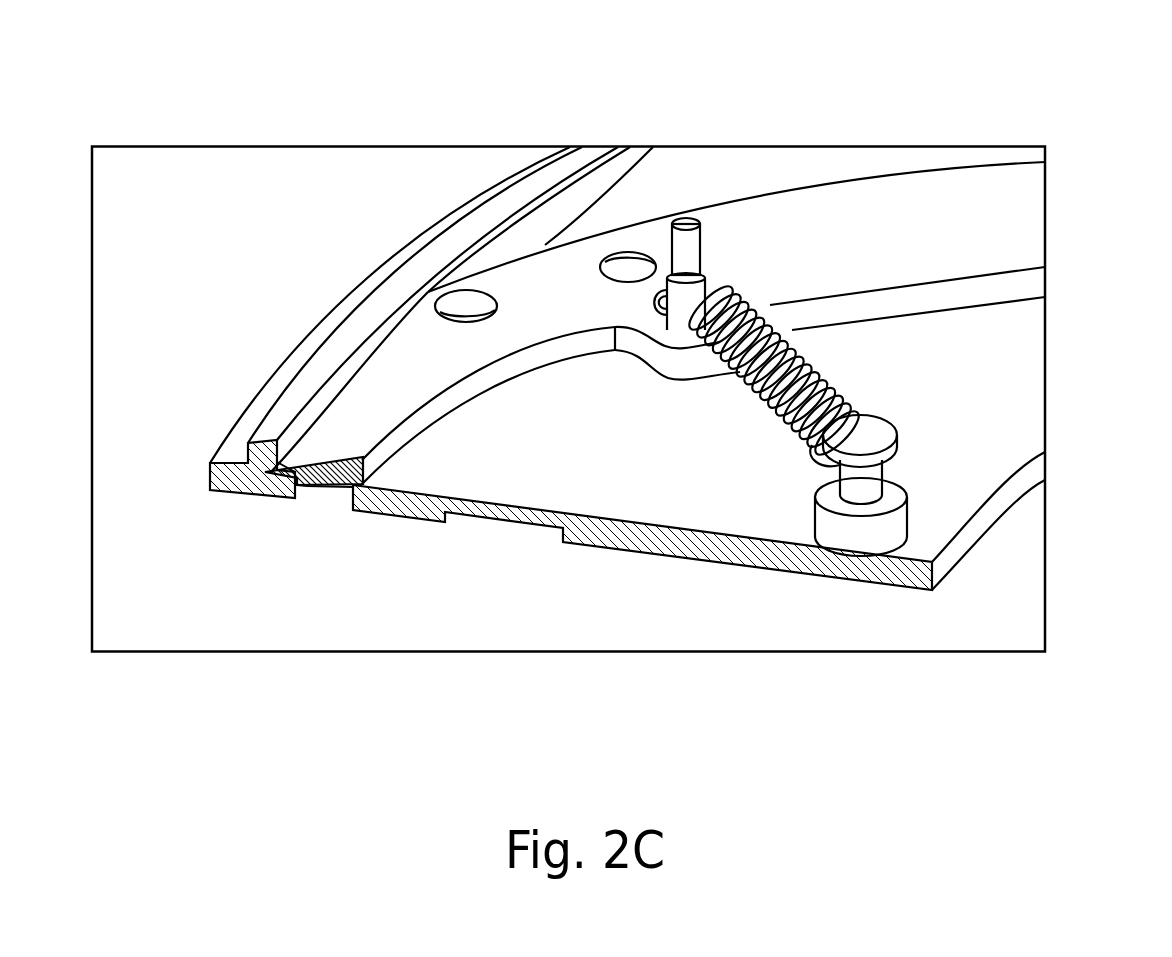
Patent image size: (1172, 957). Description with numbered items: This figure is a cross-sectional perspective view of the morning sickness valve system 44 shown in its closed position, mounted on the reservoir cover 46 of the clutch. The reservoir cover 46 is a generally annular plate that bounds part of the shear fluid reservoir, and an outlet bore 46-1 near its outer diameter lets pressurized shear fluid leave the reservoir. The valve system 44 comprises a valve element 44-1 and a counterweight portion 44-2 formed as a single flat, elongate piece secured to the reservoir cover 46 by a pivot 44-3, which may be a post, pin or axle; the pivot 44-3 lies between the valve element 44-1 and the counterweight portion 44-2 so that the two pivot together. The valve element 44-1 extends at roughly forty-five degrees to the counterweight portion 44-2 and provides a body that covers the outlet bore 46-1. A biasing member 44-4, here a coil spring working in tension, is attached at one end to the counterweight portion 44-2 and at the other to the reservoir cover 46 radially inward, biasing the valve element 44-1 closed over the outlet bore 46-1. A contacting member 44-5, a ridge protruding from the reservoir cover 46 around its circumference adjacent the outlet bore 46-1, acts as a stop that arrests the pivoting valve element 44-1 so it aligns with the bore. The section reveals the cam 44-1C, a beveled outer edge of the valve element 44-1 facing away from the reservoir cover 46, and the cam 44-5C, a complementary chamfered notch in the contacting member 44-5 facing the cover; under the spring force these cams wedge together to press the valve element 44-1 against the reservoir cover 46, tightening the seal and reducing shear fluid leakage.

The morning sickness valve system 44 is at (1068, 226).
The valve element 44-1 is at (360, 433).
The cam 44-1C is at (282, 480).
The counterweight portion 44-2 is at (955, 198).
The pivot 44-3 is at (467, 300).
The biasing member 44-4 is at (700, 400).
The contacting member 44-5 is at (298, 393).
The cam 44-5C is at (280, 472).
The reservoir cover 46 is at (753, 497).
The outlet bore 46-1 is at (307, 490).